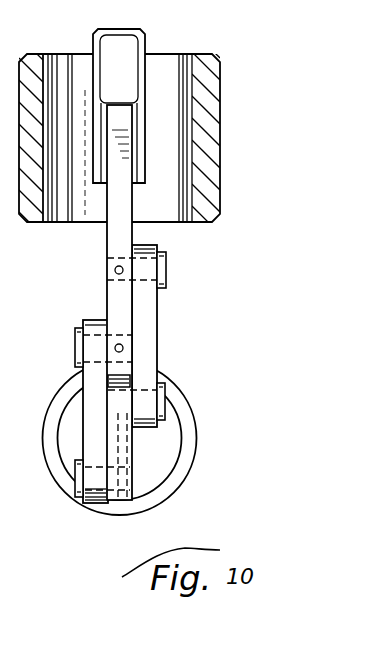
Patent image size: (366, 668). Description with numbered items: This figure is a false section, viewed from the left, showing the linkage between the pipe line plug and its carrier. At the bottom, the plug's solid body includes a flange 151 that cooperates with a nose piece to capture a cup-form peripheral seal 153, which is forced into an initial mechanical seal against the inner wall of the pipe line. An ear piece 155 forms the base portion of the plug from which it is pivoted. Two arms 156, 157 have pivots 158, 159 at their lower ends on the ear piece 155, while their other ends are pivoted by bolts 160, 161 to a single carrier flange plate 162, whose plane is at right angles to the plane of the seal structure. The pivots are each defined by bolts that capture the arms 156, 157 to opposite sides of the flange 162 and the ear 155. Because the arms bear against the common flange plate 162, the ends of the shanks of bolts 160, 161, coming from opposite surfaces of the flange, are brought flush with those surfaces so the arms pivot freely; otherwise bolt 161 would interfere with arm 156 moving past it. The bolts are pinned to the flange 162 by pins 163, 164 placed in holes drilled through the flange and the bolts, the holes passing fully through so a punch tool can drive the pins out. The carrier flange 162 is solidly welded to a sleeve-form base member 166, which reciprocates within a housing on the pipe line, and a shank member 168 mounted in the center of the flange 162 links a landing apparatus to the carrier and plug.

The flange 151 is at (180, 422).
The peripheral seal 153 is at (195, 457).
The ear piece 155 is at (158, 442).
The arm 156 is at (83, 420).
The arm 157 is at (157, 312).
The pivot 158 is at (167, 390).
The pivot 159 is at (76, 485).
The pivot bolt 160 is at (166, 263).
The pivot bolt 161 is at (75, 345).
The carrier flange plate 162 is at (107, 231).
The pin 163 is at (115, 270).
The pin 164 is at (123, 348).
The base member 166 is at (220, 115).
The shank member 168 is at (145, 40).